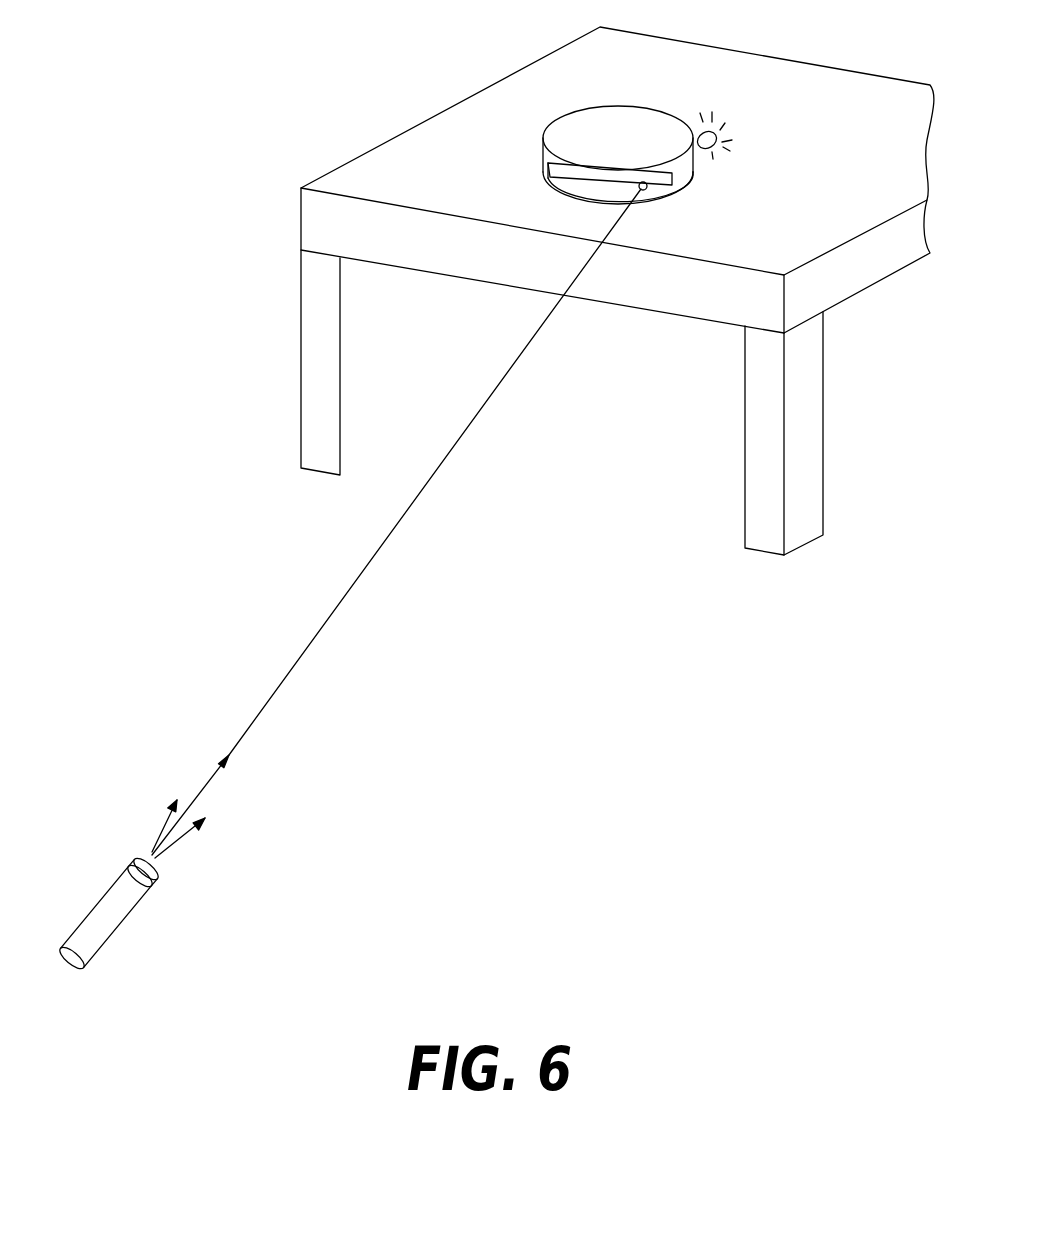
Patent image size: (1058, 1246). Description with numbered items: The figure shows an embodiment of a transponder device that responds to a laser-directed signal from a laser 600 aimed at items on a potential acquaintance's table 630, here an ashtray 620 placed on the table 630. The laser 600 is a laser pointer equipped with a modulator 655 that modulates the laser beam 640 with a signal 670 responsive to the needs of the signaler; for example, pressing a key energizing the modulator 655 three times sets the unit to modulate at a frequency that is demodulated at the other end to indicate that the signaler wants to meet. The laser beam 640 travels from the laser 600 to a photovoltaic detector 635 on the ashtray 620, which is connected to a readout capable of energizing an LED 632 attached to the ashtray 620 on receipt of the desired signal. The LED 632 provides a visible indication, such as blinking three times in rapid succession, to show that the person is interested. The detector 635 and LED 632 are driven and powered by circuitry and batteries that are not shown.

The laser 600 is at (108, 937).
The ashtray 620 is at (693, 178).
The table 630 is at (833, 310).
The LED 632 is at (722, 124).
The photovoltaic detector 635 is at (546, 162).
The laser beam 640 is at (647, 188).
The modulator 655 is at (153, 885).
The signal 670 is at (327, 622).